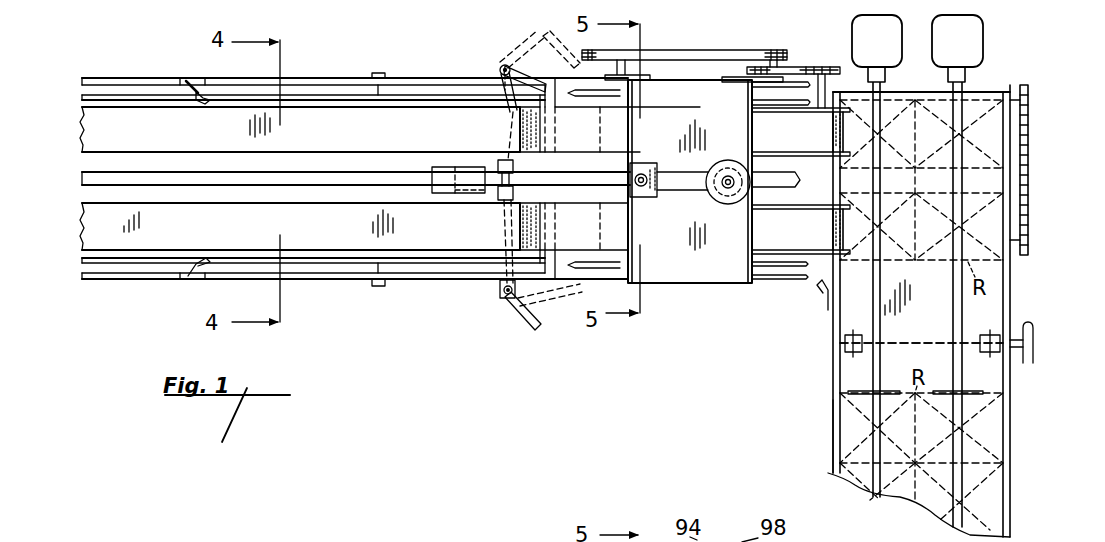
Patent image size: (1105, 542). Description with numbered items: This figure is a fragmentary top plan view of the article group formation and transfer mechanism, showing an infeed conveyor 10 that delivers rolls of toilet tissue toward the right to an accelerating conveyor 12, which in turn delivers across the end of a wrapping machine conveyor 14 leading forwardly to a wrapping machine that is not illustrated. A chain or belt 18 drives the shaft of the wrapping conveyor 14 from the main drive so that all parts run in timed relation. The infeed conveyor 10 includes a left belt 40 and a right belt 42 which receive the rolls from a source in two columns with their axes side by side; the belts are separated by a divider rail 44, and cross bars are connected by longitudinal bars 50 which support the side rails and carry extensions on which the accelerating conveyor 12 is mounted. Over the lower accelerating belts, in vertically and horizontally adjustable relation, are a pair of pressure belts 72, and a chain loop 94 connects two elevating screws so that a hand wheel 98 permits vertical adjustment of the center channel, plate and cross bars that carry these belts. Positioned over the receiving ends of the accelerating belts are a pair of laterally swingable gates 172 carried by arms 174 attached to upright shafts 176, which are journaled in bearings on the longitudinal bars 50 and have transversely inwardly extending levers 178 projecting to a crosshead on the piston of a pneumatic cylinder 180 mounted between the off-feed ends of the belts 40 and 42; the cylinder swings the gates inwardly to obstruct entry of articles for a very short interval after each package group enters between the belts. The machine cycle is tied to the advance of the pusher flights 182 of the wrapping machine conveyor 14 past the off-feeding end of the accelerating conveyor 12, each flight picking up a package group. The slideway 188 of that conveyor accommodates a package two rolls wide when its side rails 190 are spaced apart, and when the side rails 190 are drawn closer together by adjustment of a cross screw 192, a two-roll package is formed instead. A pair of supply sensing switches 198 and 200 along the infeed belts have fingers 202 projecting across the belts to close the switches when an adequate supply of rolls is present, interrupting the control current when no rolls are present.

The infeed conveyor 10 is at (118, 72).
The accelerating conveyor 12 is at (745, 49).
The wrapping machine conveyor 14 is at (1005, 80).
The chain or belt 18 is at (1028, 150).
The left belt 40 is at (100, 123).
The right belt 42 is at (100, 225).
The divider rail 44 is at (90, 178).
The longitudinal bars 50 is at (413, 78).
The pressure belts 72 is at (790, 148).
The chain loop 94 is at (693, 190).
The hand wheel 98 is at (717, 162).
The laterally swingable gates 172 is at (560, 236).
The arms 174 is at (526, 66).
The upright shafts 176 is at (500, 67).
The levers 178 is at (500, 218).
The pneumatic cylinder 180 is at (440, 167).
The pusher flights 182 is at (960, 25).
The slideway 188 is at (888, 298).
The side rails 190 is at (828, 408).
The cross screw 192 is at (872, 352).
The supply sensing switch 198 is at (193, 83).
The supply sensing switch 200 is at (196, 278).
The fingers 202 is at (205, 105).